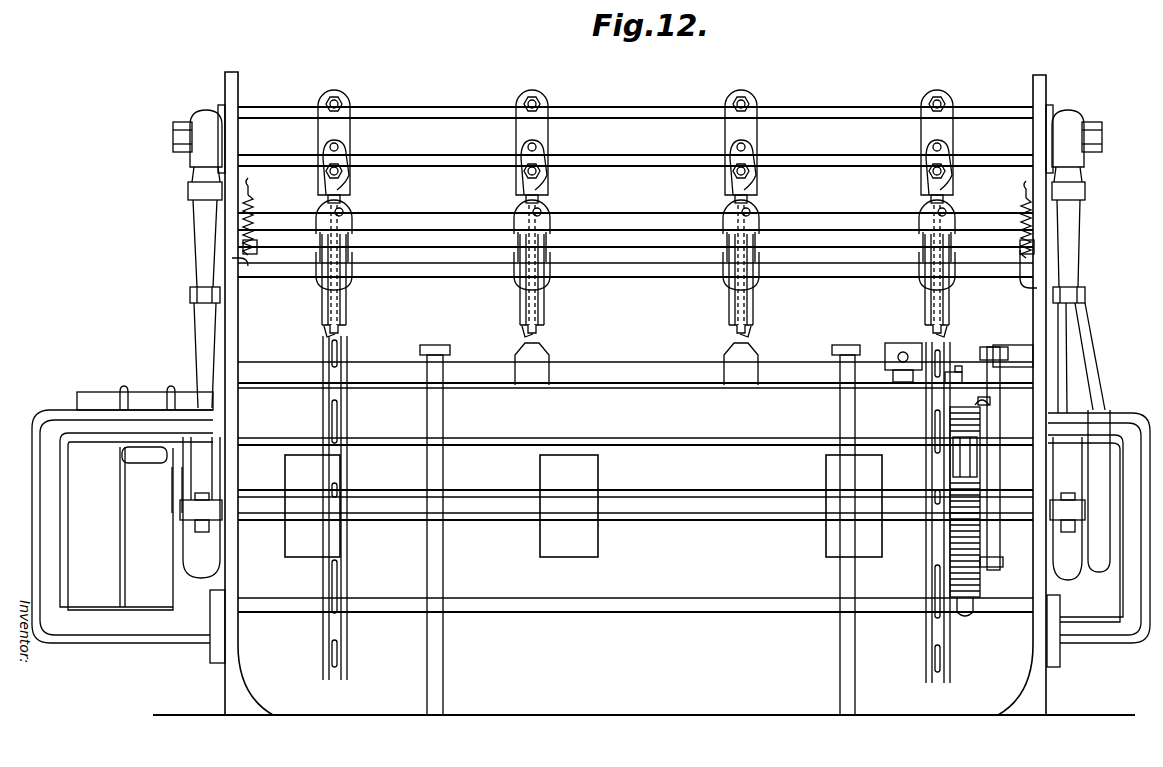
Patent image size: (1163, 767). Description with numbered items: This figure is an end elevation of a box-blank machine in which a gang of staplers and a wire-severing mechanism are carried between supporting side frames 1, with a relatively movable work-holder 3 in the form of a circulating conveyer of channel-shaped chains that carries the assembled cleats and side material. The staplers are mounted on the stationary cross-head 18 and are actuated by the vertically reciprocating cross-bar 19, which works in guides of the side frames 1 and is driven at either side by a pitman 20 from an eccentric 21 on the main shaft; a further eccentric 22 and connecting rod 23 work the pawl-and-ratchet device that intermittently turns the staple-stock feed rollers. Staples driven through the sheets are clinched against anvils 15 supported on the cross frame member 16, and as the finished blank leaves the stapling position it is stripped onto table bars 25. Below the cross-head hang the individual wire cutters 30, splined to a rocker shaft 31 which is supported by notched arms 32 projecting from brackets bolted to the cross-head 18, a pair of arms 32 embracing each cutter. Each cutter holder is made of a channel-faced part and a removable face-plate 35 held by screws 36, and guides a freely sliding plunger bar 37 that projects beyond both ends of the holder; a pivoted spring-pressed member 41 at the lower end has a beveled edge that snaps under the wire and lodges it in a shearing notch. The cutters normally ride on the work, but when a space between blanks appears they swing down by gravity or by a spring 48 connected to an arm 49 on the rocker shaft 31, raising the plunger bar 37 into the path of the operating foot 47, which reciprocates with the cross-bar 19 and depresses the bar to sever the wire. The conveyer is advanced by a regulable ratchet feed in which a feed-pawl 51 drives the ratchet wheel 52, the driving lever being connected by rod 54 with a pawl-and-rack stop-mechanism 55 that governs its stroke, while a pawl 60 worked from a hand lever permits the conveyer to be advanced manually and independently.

The supporting side frames 1 is at (232, 86).
The work-holder 3 is at (330, 669).
The anvils 15 is at (533, 370).
The cross frame member 16 is at (637, 372).
The stationary cross-head 18 is at (650, 267).
The vertically reciprocating cross-bar 19 is at (597, 130).
The pitman 20 is at (200, 257).
The eccentric 21 is at (202, 555).
The eccentric 22 is at (1107, 470).
The connecting rod 23 is at (1091, 378).
The table bars 25 is at (435, 347).
The wire cutters 30 is at (314, 314).
The rocker shaft 31 is at (837, 242).
The notched arms 32 is at (322, 238).
The face-plate 35 is at (340, 299).
The screws 36 is at (342, 230).
The plunger bar 37 is at (330, 212).
The spring-pressed member 41 is at (323, 332).
The operating foot 47 is at (350, 177).
The spring 48 is at (252, 220).
The arm 49 is at (248, 190).
The feed-pawl 51 is at (962, 405).
The ratchet wheel 52 is at (962, 597).
The rod 54 is at (950, 373).
The stop-mechanism 55 is at (883, 363).
The pawl 60 is at (968, 463).